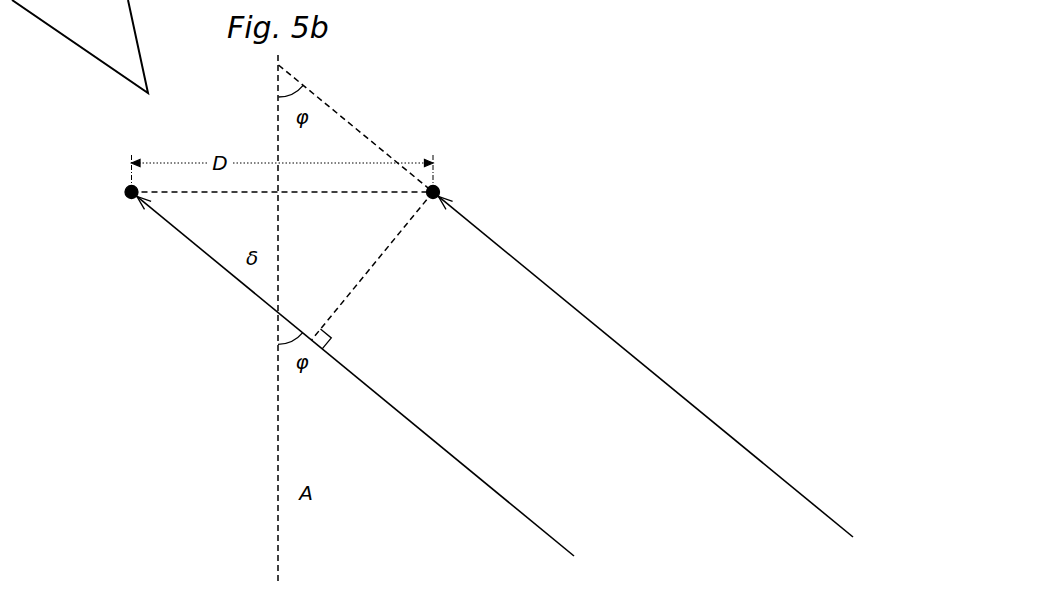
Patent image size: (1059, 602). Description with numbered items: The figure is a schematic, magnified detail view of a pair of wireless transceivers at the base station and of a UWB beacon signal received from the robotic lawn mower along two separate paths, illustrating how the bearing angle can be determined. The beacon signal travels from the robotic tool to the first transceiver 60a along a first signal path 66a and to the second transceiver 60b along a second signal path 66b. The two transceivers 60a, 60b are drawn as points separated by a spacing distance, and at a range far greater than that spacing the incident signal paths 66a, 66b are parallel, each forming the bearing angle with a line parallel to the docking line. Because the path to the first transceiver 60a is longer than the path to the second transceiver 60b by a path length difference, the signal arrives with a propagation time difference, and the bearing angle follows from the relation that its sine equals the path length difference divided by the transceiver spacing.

The first transceiver 60a is at (129, 187).
The second transceiver 60b is at (440, 188).
The first signal path 66a is at (433, 439).
The second signal path 66b is at (618, 344).